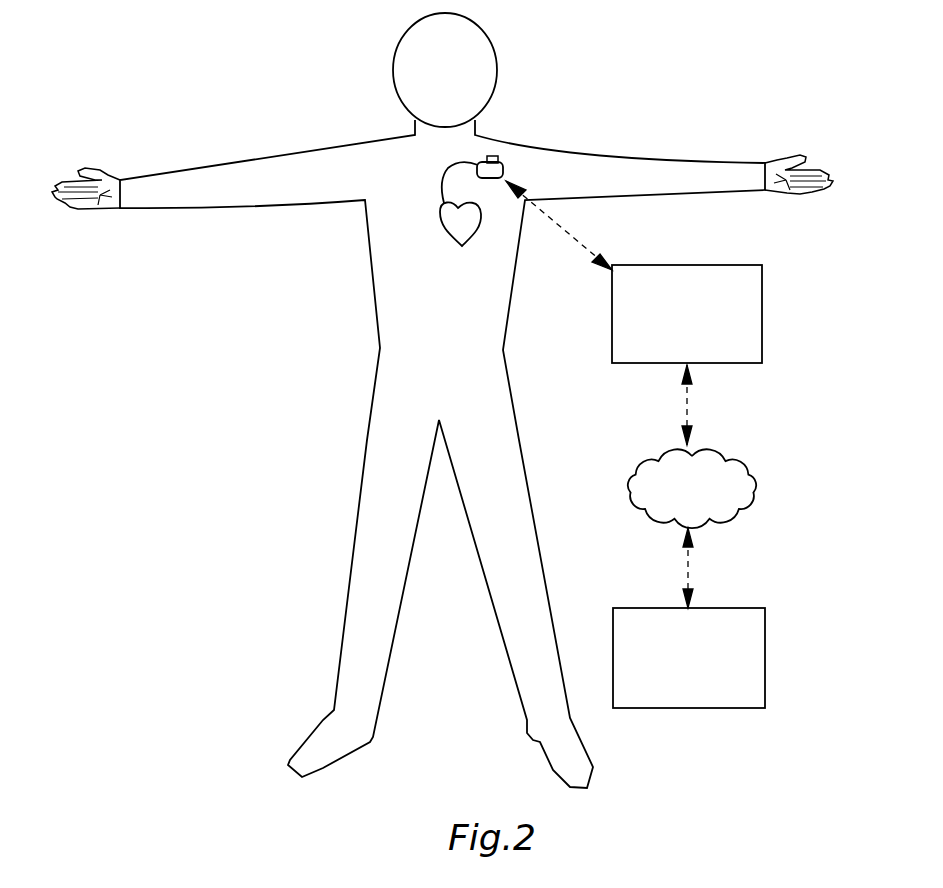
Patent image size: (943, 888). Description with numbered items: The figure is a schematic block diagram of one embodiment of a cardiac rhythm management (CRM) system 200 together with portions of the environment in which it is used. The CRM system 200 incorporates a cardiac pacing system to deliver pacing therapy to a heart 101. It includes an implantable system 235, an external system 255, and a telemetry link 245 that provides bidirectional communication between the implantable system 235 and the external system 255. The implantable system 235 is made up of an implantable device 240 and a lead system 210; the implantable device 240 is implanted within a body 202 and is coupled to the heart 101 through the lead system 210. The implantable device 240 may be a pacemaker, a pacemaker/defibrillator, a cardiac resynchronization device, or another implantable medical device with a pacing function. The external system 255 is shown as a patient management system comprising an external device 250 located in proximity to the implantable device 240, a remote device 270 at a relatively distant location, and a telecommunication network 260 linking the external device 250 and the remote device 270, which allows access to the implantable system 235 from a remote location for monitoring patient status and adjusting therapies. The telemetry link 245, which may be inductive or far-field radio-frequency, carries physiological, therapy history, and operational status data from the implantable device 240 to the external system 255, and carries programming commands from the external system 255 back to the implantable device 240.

The cardiac rhythm management (CRM) system 200 is at (785, 47).
The body 202 is at (378, 310).
The heart 101 is at (442, 223).
The lead system 210 is at (443, 178).
The implantable system 235 is at (497, 158).
The implantable device 240 is at (504, 169).
The telemetry link 245 is at (582, 256).
The external system 255 is at (658, 272).
The external device 250 is at (744, 265).
The telecommunication network 260 is at (740, 464).
The remote device 270 is at (745, 608).